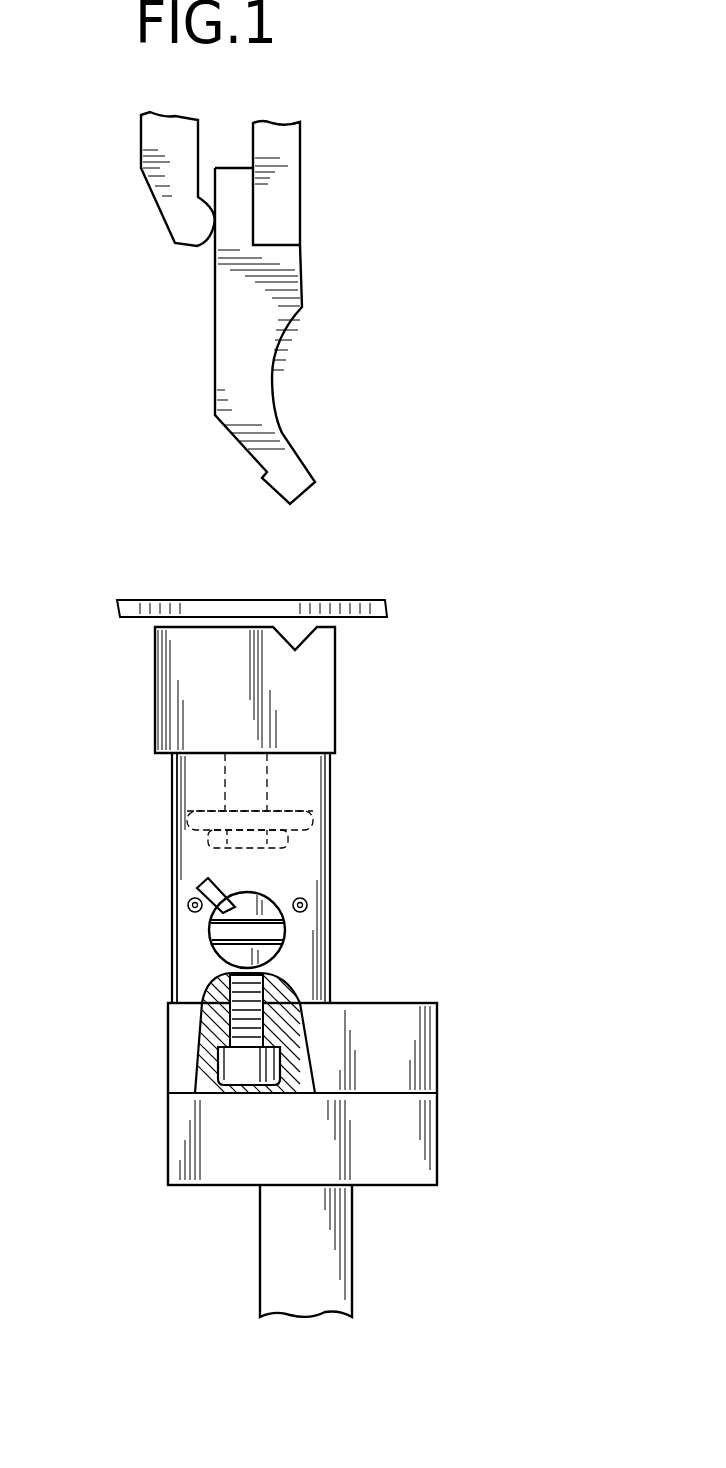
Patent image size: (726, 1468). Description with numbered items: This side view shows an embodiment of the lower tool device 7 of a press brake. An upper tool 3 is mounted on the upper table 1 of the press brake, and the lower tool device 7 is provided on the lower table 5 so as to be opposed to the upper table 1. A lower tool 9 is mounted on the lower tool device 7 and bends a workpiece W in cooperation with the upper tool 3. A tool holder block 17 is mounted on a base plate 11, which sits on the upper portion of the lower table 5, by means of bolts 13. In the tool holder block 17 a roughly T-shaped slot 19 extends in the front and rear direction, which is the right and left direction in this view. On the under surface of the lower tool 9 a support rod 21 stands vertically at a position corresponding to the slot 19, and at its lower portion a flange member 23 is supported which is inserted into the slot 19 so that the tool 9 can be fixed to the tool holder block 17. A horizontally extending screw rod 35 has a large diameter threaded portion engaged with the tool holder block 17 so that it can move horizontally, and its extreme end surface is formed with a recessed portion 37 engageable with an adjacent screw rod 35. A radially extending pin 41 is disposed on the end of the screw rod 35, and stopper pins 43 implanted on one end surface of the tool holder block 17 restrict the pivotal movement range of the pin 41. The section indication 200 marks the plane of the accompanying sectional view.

The upper table 1 is at (295, 200).
The upper tool 3 is at (293, 280).
The lower table 5 is at (327, 1262).
The lower tool device 7 is at (150, 869).
The lower tool 9 is at (322, 692).
The base plate 11 is at (407, 1043).
The bolts 13 is at (225, 1063).
The tool holder block 17 is at (187, 835).
The T-shaped slots 19 is at (182, 790).
The support rods 21 is at (270, 783).
The flange member 23 is at (320, 823).
The screw rod 35 is at (220, 950).
The recessed portion 37 is at (270, 933).
The pin 41 is at (198, 884).
The stopper pins 43 is at (185, 908).
The workpiece W is at (345, 600).
The section line 200 is at (240, 594).